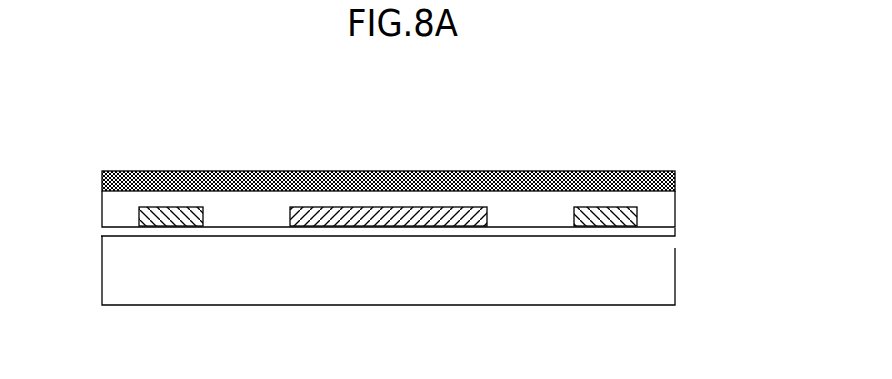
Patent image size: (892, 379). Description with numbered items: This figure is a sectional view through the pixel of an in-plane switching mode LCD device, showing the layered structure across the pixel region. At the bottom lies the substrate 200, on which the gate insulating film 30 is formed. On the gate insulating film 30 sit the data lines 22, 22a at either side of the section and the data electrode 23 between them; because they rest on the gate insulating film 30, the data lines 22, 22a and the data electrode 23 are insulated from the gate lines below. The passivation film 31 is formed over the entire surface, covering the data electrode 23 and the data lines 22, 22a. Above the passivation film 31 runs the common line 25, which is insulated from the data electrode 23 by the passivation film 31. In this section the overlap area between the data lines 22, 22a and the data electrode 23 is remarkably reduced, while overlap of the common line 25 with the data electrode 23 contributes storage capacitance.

The common line 25 is at (676, 181).
The passivation film 31 is at (668, 202).
The data line 22 is at (175, 227).
The data line 22a is at (637, 217).
The data electrode 23 is at (387, 206).
The gate insulating film 30 is at (675, 228).
The substrate 200 is at (673, 278).